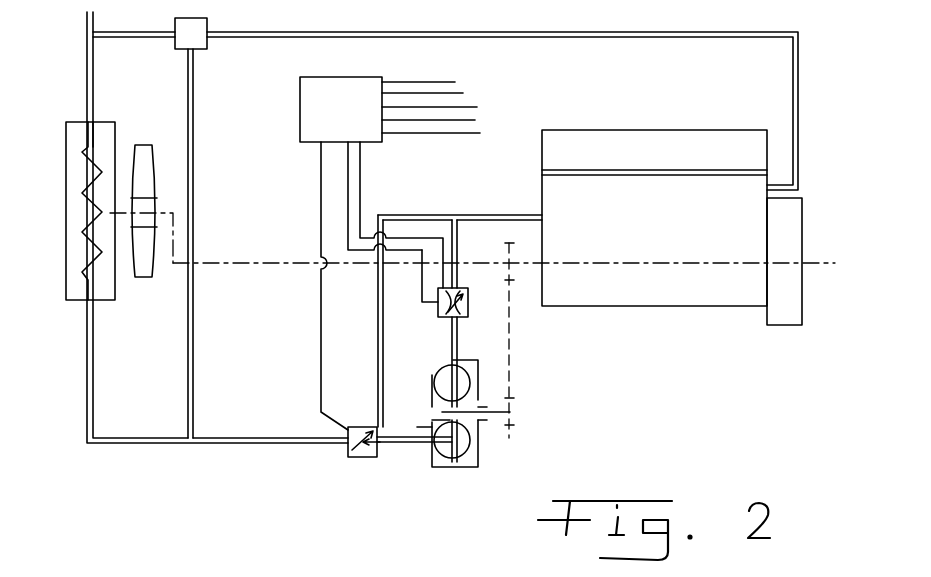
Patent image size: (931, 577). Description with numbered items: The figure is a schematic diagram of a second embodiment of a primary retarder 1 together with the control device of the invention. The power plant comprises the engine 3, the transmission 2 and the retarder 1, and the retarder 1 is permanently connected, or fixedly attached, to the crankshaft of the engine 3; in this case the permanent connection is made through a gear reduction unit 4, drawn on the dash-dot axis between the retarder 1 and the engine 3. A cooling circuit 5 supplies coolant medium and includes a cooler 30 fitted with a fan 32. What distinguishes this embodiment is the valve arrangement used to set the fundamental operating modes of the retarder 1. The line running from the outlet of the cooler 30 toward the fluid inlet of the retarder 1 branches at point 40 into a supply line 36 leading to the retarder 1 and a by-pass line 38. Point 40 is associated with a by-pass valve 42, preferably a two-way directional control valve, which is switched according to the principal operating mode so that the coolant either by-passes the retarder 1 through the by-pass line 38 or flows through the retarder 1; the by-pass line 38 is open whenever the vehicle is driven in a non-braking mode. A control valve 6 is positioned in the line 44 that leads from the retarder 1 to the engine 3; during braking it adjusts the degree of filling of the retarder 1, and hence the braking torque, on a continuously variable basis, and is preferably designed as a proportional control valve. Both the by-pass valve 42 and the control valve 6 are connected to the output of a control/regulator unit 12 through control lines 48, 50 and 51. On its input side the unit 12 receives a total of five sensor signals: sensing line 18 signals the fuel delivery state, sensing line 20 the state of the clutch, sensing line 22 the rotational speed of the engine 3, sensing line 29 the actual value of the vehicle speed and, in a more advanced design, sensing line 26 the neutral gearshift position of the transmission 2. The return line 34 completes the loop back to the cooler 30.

The primary retarder 1 is at (477, 447).
The transmission 2 is at (785, 320).
The engine 3 is at (628, 295).
The gear reduction unit 4 is at (508, 360).
The cooling circuit 5 is at (193, 302).
The control valve 6 is at (468, 305).
The control/regulator unit 12 is at (300, 108).
The sensing line 18 is at (418, 82).
The sensing line 20 is at (463, 93).
The sensing line 22 is at (472, 136).
The sensing line 26 is at (473, 122).
The sensing line 29 is at (470, 106).
The cooler 30 is at (103, 302).
The fan 32 is at (142, 273).
The return line 34 is at (272, 443).
The supply line 36 is at (432, 453).
The by-pass line 38 is at (378, 312).
The branch point 40 is at (388, 447).
The by-pass valve 42 is at (365, 457).
The line 44 is at (482, 243).
The control line 48 is at (319, 203).
The control line 50 is at (360, 172).
The control line 51 is at (422, 282).